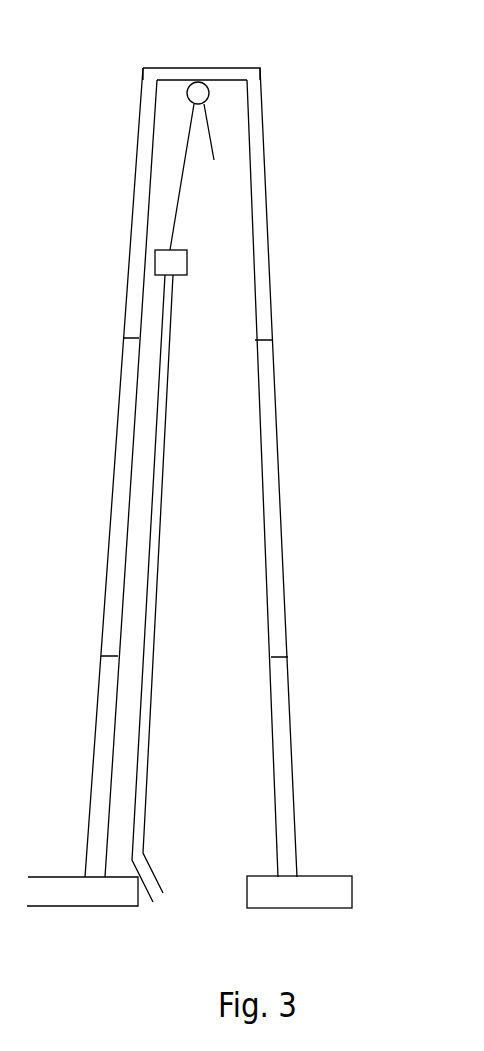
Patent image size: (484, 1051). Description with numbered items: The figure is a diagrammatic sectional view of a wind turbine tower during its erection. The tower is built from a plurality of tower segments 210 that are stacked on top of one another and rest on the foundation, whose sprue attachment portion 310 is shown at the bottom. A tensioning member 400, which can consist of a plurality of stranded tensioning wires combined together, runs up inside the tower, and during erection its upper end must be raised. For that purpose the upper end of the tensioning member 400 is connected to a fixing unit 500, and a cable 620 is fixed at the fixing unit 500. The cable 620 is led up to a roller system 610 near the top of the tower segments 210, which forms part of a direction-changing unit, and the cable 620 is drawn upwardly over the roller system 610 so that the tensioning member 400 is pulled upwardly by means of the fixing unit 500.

The tower segments 210 is at (263, 197).
The sprue attachment portion 310 is at (335, 912).
The tensioning member 400 is at (150, 740).
The fixing unit 500 is at (187, 262).
The roller system 610 is at (188, 96).
The cable 620 is at (188, 137).